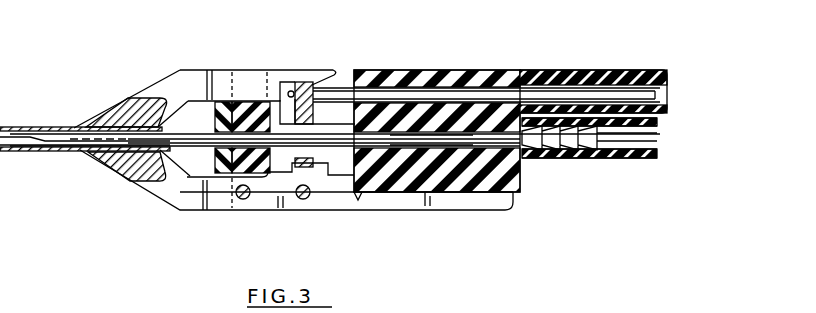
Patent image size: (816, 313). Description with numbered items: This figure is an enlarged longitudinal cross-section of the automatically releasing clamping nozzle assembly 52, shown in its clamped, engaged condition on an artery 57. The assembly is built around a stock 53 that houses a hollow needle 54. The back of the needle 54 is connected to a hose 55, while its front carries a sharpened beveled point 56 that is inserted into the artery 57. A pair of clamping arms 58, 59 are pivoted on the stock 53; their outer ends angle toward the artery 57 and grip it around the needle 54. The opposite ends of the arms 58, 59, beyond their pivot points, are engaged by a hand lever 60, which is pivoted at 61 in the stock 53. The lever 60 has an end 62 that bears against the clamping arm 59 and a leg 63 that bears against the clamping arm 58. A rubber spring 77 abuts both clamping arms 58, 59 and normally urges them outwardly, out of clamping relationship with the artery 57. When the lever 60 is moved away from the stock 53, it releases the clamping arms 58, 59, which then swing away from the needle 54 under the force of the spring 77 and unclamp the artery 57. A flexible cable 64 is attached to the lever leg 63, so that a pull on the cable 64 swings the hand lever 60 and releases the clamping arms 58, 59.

The automatically releasing clamping nozzle assembly 52 is at (398, 65).
The stock 53 is at (435, 73).
The hollow needle 54 is at (192, 138).
The hose 55 is at (608, 160).
The sharpened beveled point 56 is at (35, 142).
The artery 57 is at (25, 127).
The clamping arm 58 is at (167, 83).
The clamping arm 59 is at (157, 187).
The hand lever 60 is at (490, 198).
The pivot 61 is at (307, 198).
The lever end 62 is at (278, 185).
The lever leg 63 is at (310, 83).
The flexible cable 64 is at (338, 92).
The rubber spring 77 is at (215, 165).